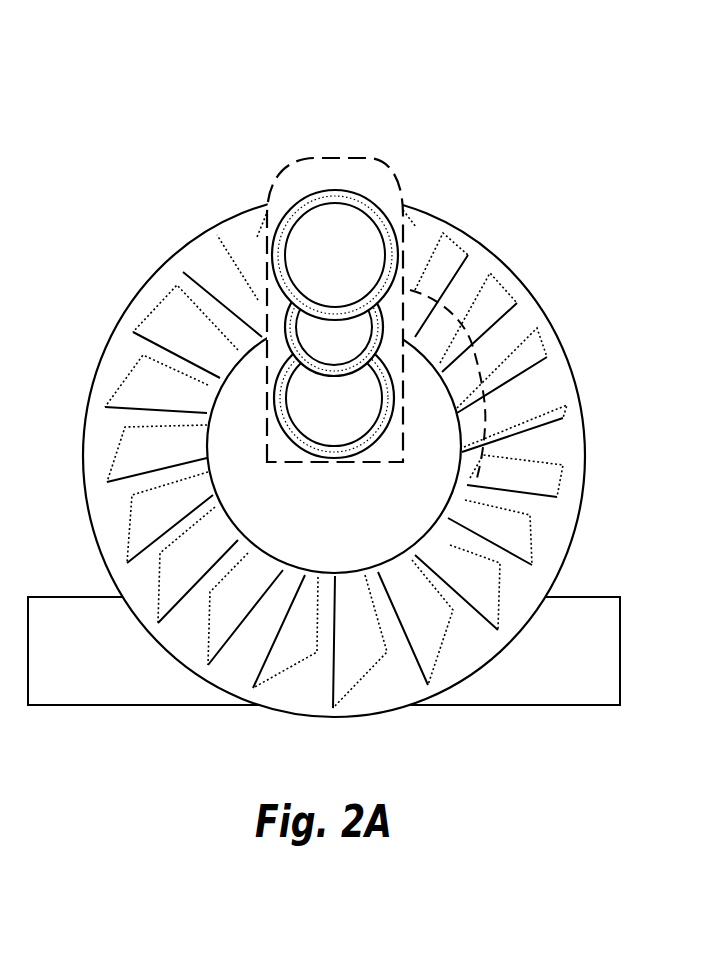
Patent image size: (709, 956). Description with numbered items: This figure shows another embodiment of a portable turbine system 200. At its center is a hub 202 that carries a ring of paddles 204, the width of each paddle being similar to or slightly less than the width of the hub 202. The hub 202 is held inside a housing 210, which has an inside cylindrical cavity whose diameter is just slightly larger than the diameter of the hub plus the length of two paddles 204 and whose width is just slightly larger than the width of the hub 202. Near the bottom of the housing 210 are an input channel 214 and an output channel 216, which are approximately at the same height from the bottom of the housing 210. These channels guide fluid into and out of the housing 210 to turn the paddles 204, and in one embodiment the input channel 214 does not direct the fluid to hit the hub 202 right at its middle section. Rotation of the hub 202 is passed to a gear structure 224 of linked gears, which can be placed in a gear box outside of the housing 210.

The portable turbine system 200 is at (366, 398).
The hub 202 is at (355, 512).
The paddles 204 is at (553, 480).
The housing 210 is at (498, 256).
The input channel 214 is at (183, 705).
The output channel 216 is at (570, 705).
The gear structure 224 is at (297, 163).